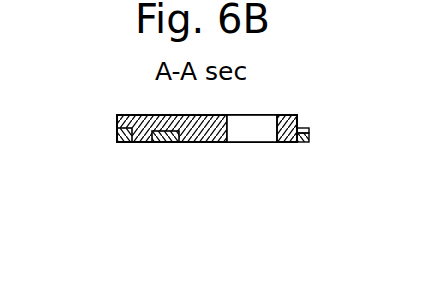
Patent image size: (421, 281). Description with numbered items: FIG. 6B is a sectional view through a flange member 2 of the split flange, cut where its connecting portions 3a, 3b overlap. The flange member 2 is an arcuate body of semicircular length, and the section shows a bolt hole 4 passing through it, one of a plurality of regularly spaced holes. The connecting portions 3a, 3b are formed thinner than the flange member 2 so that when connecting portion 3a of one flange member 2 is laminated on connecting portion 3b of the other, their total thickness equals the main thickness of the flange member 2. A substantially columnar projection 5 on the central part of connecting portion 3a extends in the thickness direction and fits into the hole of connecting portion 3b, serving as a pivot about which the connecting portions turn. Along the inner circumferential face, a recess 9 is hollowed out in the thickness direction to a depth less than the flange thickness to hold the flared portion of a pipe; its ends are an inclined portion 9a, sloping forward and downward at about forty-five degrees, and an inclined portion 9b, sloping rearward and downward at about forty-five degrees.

The flange member 2 is at (187, 162).
The connecting portion 3a is at (117, 115).
The connecting portion 3b is at (117, 139).
The bolt hole 4 is at (245, 135).
The projection 5 is at (152, 143).
The recess 9 is at (297, 127).
The inclined portion 9a is at (310, 142).
The inclined portion 9b is at (310, 132).